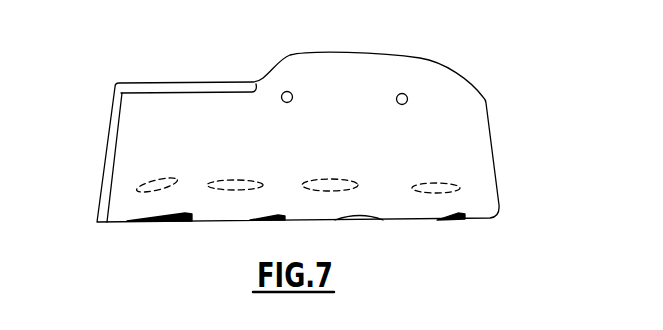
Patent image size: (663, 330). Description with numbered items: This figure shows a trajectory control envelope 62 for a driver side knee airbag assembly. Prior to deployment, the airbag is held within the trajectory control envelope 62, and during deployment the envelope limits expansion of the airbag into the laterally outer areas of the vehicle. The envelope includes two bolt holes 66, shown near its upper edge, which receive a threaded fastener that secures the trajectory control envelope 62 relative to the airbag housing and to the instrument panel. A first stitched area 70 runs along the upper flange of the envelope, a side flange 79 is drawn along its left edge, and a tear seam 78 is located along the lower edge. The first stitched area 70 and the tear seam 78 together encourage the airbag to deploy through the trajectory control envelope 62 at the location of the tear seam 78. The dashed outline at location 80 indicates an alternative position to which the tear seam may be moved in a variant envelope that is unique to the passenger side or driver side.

The trajectory control envelope 62 is at (477, 138).
The bolt holes 66 is at (402, 93).
The first stitched area 70 is at (172, 91).
The tear seam 78 is at (466, 219).
The side flange 79 is at (114, 144).
The location 80 is at (477, 191).